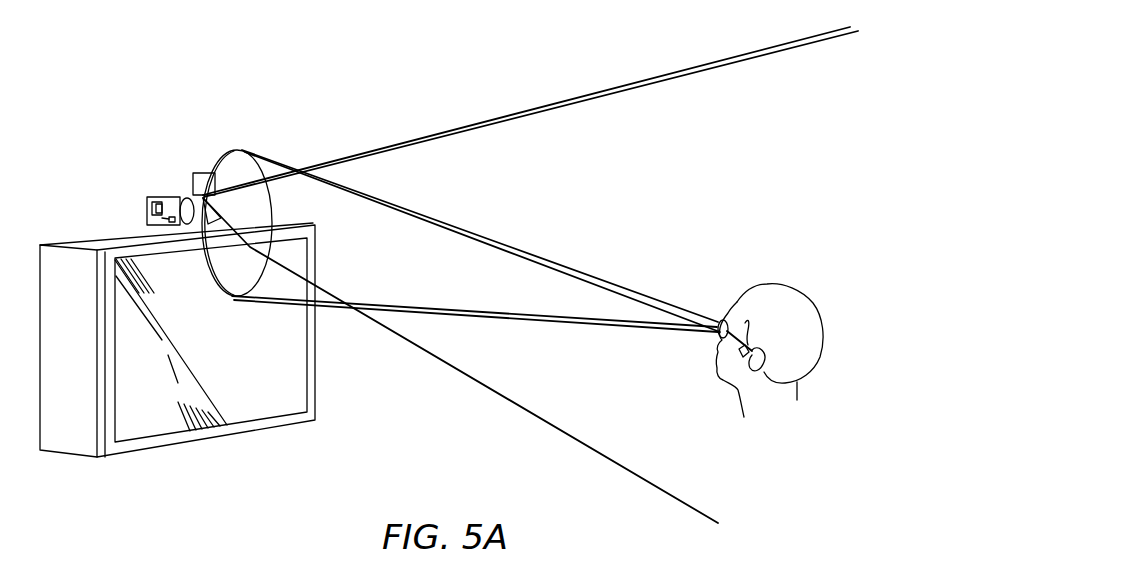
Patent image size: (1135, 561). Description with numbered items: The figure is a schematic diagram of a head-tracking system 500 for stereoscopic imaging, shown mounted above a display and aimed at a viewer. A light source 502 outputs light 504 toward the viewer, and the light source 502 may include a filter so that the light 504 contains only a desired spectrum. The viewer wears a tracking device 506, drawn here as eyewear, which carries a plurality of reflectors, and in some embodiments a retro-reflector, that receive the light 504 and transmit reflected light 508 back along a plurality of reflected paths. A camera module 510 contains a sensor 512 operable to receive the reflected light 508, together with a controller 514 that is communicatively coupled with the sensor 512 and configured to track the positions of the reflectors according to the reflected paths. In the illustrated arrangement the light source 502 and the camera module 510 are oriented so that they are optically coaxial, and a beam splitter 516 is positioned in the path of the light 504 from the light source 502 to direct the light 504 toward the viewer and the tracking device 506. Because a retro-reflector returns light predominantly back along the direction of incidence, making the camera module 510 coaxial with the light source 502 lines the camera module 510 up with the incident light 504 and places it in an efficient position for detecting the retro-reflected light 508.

The head-tracking system 500 is at (380, 416).
The light source 502 is at (197, 173).
The light 504 is at (545, 107).
The tracking device 506 is at (705, 347).
The reflected light 508 is at (542, 303).
The camera module 510 is at (165, 197).
The sensor 512 is at (152, 210).
The controller 514 is at (172, 223).
The beam splitter 516 is at (222, 210).